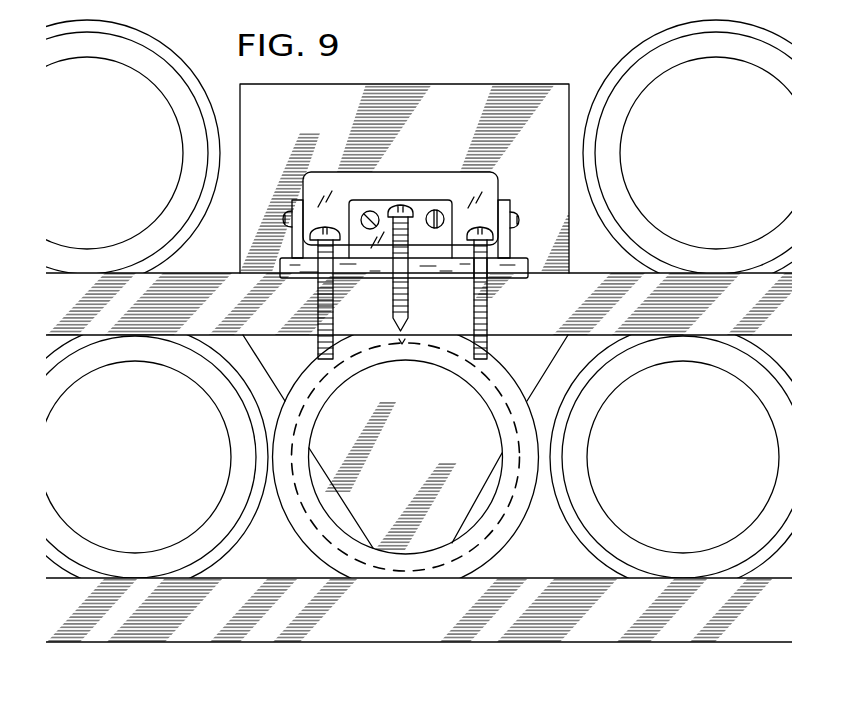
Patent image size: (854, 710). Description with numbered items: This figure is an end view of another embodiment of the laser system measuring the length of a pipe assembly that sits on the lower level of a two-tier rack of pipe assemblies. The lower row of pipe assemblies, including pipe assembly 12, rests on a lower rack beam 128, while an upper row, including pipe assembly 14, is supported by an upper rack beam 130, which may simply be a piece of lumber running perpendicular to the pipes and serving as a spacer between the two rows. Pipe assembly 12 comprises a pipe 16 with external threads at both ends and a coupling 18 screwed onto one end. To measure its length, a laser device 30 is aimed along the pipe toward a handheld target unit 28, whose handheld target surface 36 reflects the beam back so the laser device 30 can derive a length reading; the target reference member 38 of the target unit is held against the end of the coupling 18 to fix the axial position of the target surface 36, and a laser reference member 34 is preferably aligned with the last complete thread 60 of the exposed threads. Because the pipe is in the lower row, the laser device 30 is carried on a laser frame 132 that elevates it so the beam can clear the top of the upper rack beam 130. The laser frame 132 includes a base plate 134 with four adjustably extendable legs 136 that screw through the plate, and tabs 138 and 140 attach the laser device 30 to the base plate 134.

The pipe assembly 12 is at (298, 533).
The pipe assembly 14 is at (209, 200).
The pipe 16 is at (528, 473).
The coupling 18 is at (531, 510).
The handheld target unit 28 is at (528, 83).
The laser device 30 is at (499, 183).
The laser reference member 34 is at (391, 203).
The handheld target surface 36 is at (460, 100).
The target reference member 38 is at (370, 501).
The last complete thread 60 is at (520, 445).
The lower rack beam 128 is at (187, 642).
The upper rack beam 130 is at (607, 270).
The laser frame 132 is at (518, 279).
The base plate 134 is at (496, 280).
The adjustably extendable legs 136 is at (317, 352).
The tab 138 is at (510, 233).
The tab 140 is at (445, 203).